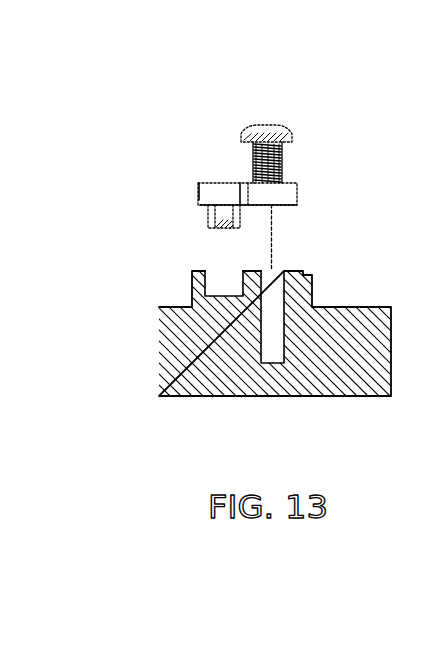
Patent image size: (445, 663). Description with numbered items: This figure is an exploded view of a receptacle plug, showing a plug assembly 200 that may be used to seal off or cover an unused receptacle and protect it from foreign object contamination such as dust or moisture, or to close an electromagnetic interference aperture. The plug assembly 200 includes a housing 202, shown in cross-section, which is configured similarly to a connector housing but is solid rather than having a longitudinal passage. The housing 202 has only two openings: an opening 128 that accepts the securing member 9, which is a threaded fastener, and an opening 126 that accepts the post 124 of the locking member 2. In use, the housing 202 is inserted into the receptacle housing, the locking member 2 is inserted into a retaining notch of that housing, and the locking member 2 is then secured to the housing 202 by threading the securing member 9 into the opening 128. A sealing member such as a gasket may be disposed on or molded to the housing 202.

The plug assembly 200 is at (138, 180).
The locking member 2 is at (208, 196).
The securing member 9 is at (270, 132).
The post 124 is at (217, 215).
The opening 126 is at (212, 283).
The opening 128 is at (275, 313).
The housing 202 is at (351, 323).